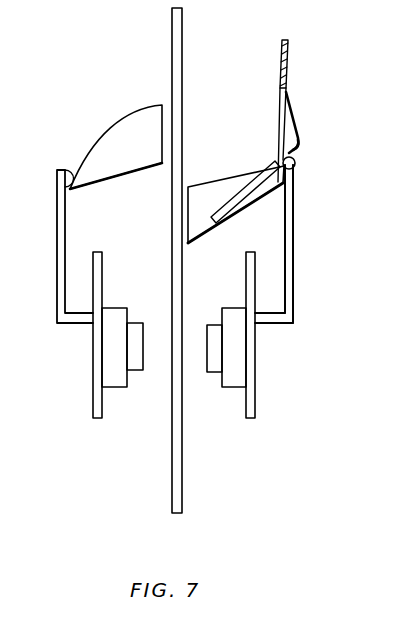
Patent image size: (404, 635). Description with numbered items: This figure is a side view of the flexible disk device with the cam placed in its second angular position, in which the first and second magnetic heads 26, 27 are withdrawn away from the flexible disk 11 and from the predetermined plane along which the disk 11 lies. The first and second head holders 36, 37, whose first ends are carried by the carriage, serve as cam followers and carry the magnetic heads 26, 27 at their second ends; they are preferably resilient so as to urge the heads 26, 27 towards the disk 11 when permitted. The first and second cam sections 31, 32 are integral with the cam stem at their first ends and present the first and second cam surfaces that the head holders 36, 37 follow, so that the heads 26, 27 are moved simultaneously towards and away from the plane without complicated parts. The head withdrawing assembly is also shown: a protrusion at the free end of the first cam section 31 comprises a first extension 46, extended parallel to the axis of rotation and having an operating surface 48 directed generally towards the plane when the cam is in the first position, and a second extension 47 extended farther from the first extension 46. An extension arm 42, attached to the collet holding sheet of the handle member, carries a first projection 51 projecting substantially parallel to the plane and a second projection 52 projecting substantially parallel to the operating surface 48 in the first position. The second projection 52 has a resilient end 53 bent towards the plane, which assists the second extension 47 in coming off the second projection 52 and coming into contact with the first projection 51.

The flexible disk 11 is at (183, 500).
The first magnetic head 26 is at (212, 375).
The second magnetic head 27 is at (140, 375).
The first cam section 31 is at (236, 186).
The second cam section 32 is at (105, 188).
The first head holder 36 is at (291, 268).
The second head holder 37 is at (93, 372).
The extension arm 42 is at (296, 95).
The first extension 46 is at (269, 193).
The second extension 47 is at (298, 168).
The operating surface 48 is at (230, 207).
The first projection 51 is at (282, 117).
The second projection 52 is at (299, 108).
The resilient end 53 is at (300, 150).